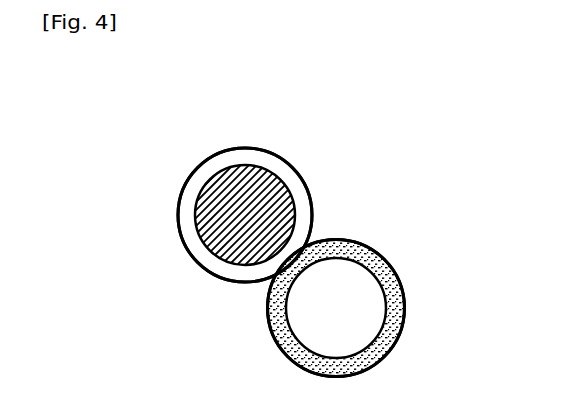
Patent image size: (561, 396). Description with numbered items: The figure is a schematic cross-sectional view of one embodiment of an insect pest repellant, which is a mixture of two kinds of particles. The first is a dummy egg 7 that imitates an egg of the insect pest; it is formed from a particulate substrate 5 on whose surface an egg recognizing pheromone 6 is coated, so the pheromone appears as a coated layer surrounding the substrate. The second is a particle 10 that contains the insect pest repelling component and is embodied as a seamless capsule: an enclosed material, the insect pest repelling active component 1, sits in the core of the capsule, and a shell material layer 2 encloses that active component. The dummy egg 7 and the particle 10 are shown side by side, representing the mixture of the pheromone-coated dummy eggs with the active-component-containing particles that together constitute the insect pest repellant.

The particle 10 is at (199, 146).
The insect pest repelling active component 1 is at (248, 187).
The shell material layer 2 is at (207, 173).
The particulate substrate 5 is at (347, 302).
The egg recognizing pheromone 6 is at (272, 290).
The dummy egg 7 is at (405, 331).